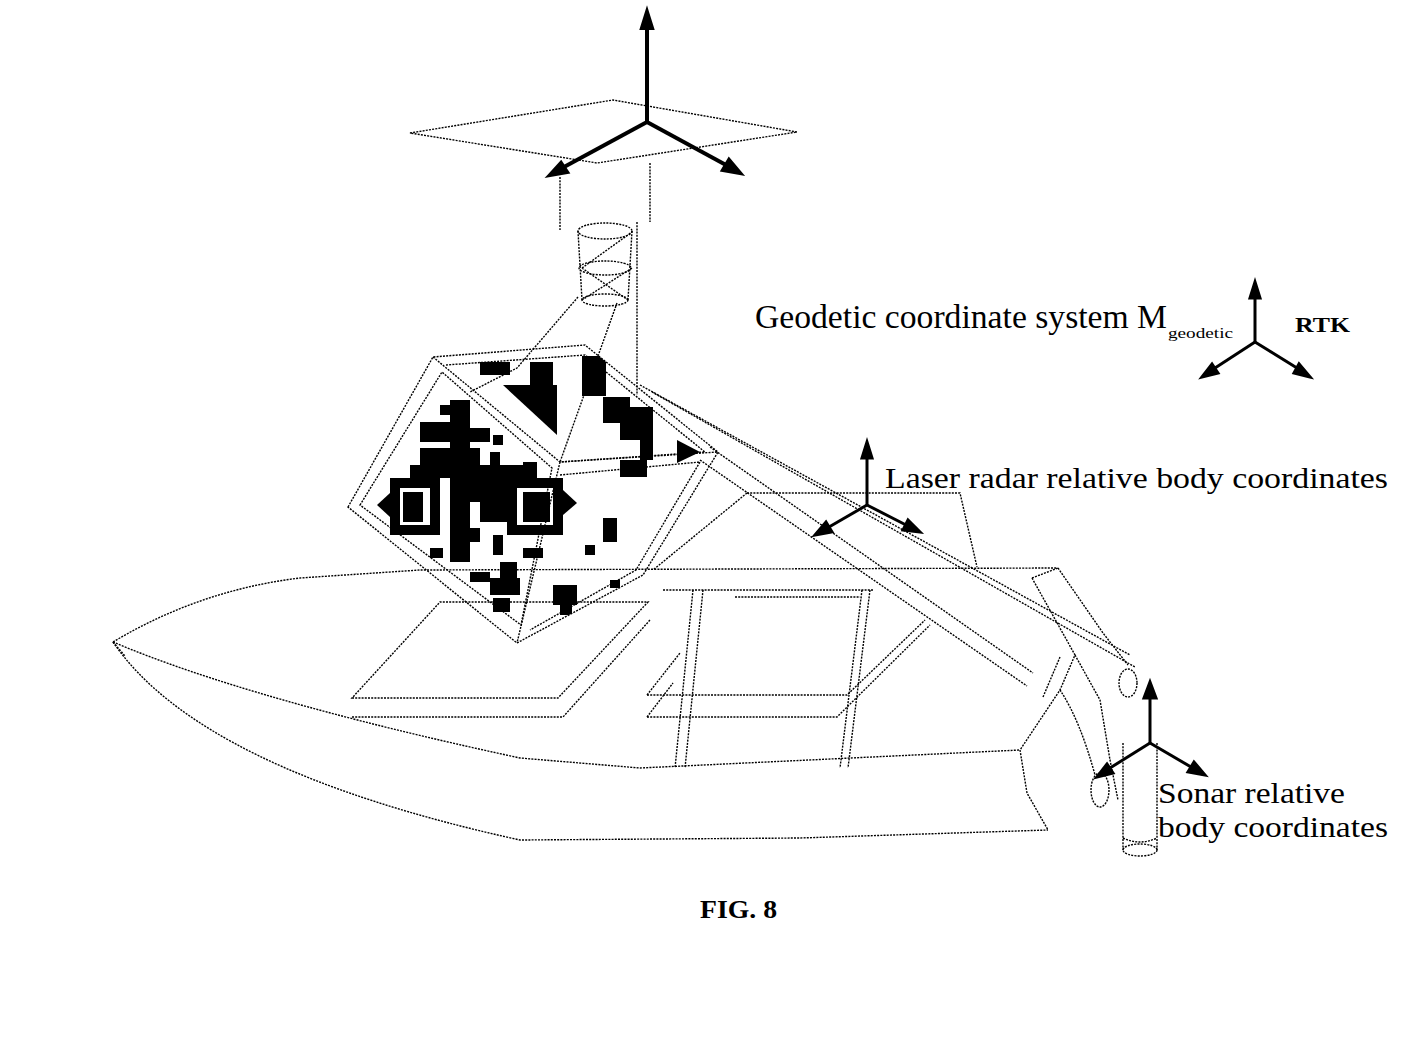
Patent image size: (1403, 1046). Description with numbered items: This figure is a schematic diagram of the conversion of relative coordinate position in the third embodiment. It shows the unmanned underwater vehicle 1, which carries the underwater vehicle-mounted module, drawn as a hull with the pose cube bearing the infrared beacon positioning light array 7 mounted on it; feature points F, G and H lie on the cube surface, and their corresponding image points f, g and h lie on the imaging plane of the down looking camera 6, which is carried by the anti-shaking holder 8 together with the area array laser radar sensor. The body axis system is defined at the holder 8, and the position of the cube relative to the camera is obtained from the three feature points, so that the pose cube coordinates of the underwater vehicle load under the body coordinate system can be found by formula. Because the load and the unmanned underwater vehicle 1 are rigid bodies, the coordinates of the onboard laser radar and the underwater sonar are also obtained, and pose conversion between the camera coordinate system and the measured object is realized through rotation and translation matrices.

The unmanned underwater vehicle 1 is at (232, 632).
The down looking camera 6 is at (598, 202).
The infrared beacon positioning light array 7 is at (457, 400).
The holder 8 is at (497, 135).